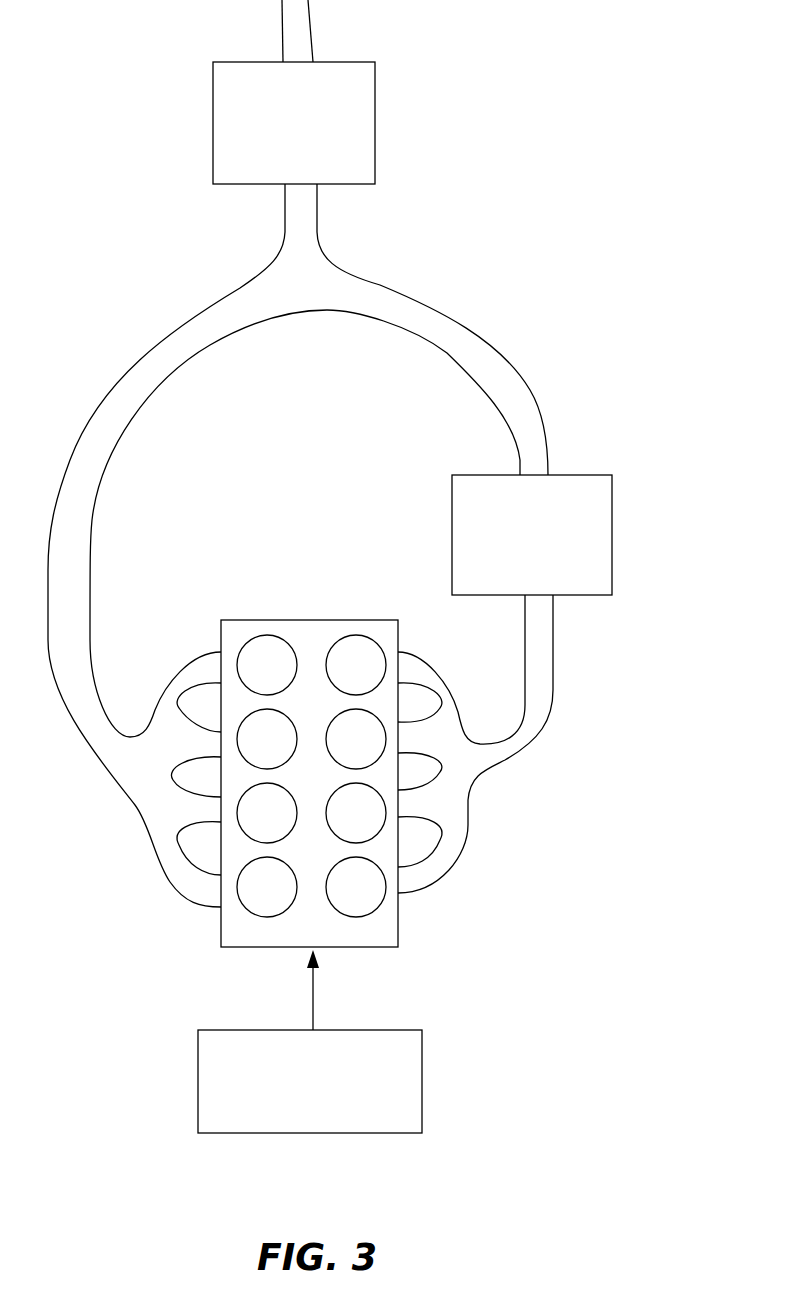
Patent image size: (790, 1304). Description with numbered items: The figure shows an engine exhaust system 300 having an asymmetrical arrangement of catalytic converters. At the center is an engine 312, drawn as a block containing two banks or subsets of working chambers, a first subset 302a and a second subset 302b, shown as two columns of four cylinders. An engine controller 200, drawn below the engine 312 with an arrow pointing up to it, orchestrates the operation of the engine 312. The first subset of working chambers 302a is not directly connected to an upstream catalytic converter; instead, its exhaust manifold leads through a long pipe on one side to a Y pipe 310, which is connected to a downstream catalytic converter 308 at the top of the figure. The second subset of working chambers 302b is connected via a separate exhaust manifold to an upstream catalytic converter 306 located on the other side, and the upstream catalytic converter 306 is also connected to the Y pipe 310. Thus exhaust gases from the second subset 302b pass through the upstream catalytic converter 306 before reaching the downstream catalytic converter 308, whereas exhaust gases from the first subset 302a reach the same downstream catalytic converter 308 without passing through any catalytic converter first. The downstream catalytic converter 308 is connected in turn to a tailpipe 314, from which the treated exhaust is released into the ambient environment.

The engine exhaust system 300 is at (510, 157).
The first subset of working chambers 302a is at (272, 578).
The second subset of working chambers 302b is at (358, 578).
The upstream catalytic converter 306 is at (532, 535).
The downstream catalytic converter 308 is at (294, 123).
The Y pipe 310 is at (306, 290).
The engine 312 is at (235, 952).
The tailpipe 314 is at (263, 0).
The engine controller 200 is at (310, 1041).